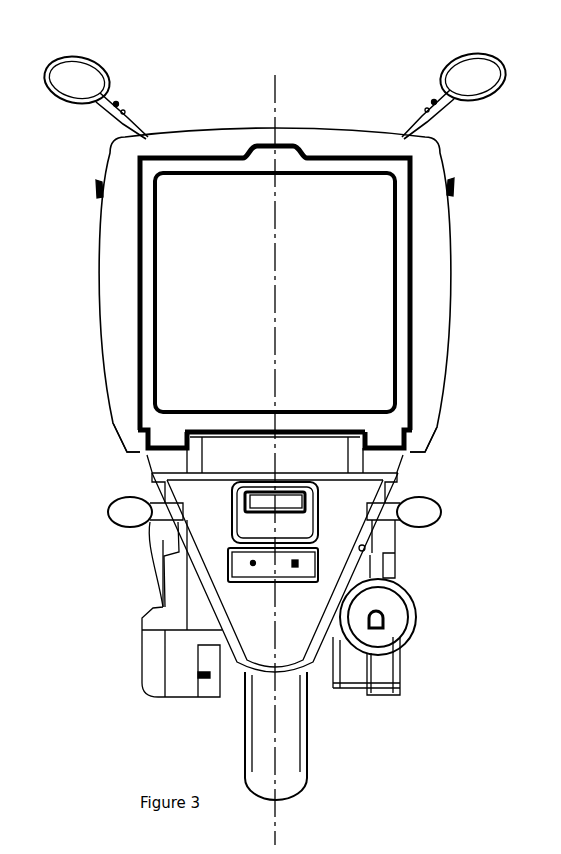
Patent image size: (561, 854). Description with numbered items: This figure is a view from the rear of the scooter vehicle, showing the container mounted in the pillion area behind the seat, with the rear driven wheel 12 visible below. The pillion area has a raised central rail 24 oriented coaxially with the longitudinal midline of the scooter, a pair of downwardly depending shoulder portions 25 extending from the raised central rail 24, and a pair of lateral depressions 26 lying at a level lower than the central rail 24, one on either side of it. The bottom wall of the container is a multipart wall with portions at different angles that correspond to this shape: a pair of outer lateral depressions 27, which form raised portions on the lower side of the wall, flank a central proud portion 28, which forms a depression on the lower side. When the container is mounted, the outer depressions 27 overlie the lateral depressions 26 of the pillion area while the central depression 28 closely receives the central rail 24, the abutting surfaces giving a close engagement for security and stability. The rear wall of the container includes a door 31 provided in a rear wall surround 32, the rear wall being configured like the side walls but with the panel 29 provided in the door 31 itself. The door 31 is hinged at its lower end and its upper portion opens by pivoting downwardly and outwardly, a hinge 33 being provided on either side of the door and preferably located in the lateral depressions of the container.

The rear driven wheel 12 is at (262, 743).
The raised central rail 24 is at (282, 433).
The shoulder portions 25 is at (177, 450).
The lateral depressions 26 is at (147, 455).
The outer lateral depressions 27 is at (128, 452).
The central proud portion 28 is at (323, 430).
The panel 29 is at (274, 460).
The door 31 is at (417, 237).
The rear wall surround 32 is at (430, 167).
The hinge 33 is at (162, 442).